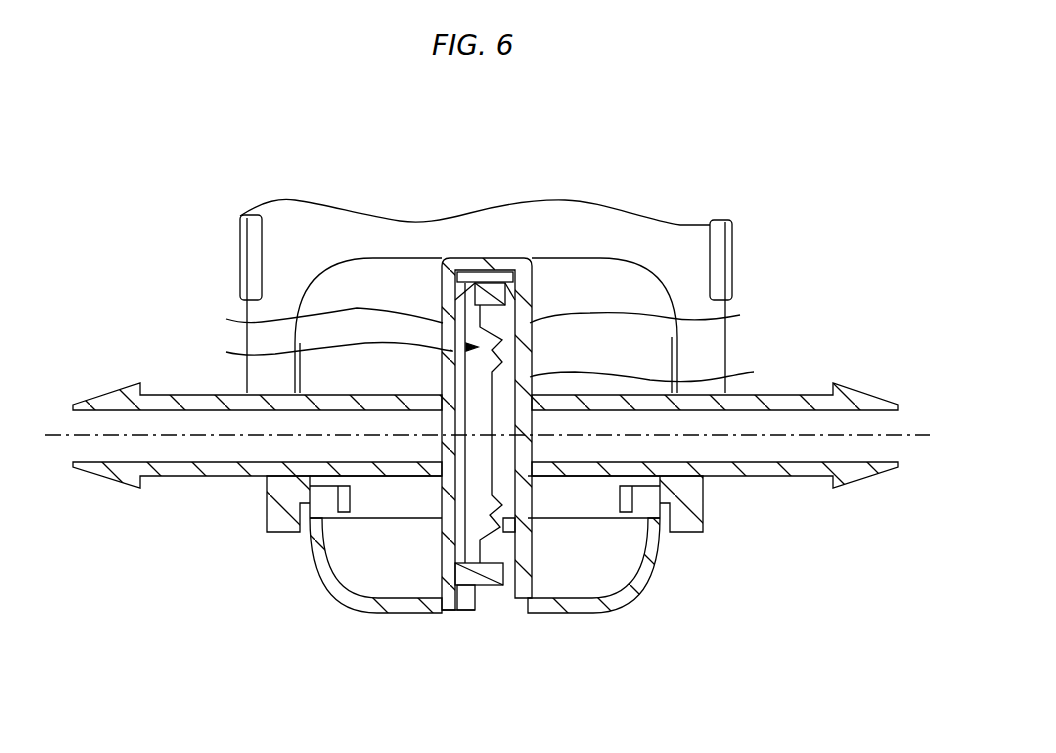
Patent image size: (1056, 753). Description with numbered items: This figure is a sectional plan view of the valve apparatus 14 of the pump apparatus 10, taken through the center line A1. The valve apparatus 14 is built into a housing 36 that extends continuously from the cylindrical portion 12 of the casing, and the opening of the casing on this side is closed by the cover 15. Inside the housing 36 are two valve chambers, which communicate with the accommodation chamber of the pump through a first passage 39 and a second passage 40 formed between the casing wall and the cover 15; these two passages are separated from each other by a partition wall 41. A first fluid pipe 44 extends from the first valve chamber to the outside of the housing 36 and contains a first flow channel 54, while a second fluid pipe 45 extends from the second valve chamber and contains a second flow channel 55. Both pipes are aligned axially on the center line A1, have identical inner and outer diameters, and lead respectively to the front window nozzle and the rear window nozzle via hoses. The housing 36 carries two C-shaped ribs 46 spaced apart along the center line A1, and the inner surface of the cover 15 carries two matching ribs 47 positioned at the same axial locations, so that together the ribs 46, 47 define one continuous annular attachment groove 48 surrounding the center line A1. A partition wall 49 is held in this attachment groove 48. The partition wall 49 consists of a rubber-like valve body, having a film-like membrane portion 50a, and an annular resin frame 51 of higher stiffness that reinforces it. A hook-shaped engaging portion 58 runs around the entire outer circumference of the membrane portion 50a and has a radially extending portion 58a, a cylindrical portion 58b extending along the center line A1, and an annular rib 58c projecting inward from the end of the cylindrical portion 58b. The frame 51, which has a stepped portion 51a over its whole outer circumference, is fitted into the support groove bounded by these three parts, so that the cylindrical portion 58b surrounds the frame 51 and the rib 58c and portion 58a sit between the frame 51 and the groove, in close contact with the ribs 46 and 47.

The pump apparatus 10 is at (703, 192).
The cylindrical portion 12 is at (638, 255).
The valve apparatus 14 is at (700, 341).
The cover 15 is at (627, 608).
The housing 36 is at (407, 270).
The first passage 39 is at (322, 497).
The second passage 40 is at (650, 494).
The partition wall 41 is at (368, 510).
The first fluid pipe 44 is at (174, 478).
The second fluid pipe 45 is at (793, 470).
The ribs 46 is at (484, 319).
The ribs 47 is at (383, 597).
The attachment groove 48 is at (517, 522).
The partition wall 49 is at (325, 356).
The membrane portion 50a is at (665, 375).
The frame 51 is at (460, 270).
The stepped portion 51a is at (478, 612).
The first flow channel 54 is at (163, 393).
The second flow channel 55 is at (823, 417).
The engaging portion 58 is at (513, 270).
The portion extending in a radial direction 58a is at (535, 270).
The cylindrical portion 58b is at (472, 270).
The annular rib 58c is at (463, 607).
The center line A1 is at (905, 436).